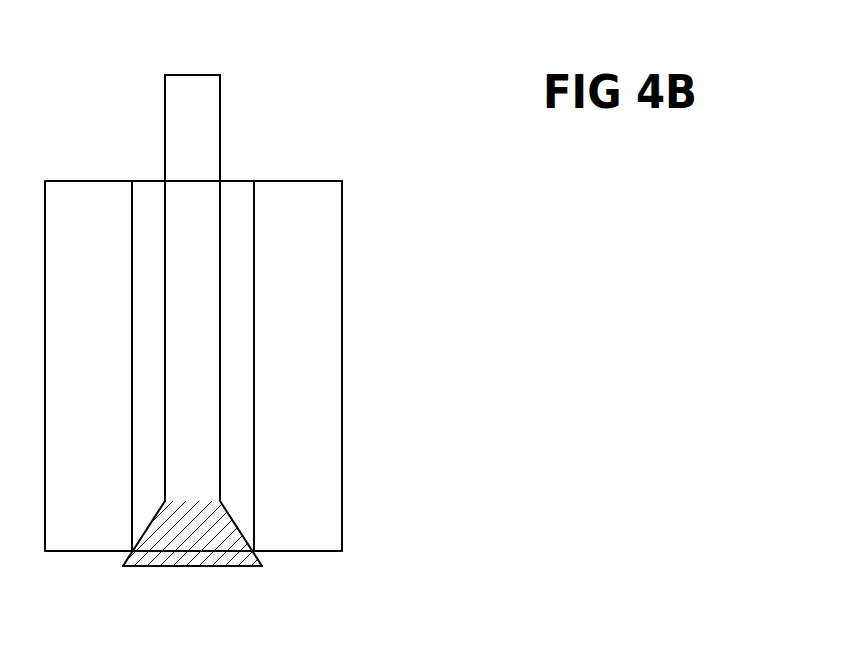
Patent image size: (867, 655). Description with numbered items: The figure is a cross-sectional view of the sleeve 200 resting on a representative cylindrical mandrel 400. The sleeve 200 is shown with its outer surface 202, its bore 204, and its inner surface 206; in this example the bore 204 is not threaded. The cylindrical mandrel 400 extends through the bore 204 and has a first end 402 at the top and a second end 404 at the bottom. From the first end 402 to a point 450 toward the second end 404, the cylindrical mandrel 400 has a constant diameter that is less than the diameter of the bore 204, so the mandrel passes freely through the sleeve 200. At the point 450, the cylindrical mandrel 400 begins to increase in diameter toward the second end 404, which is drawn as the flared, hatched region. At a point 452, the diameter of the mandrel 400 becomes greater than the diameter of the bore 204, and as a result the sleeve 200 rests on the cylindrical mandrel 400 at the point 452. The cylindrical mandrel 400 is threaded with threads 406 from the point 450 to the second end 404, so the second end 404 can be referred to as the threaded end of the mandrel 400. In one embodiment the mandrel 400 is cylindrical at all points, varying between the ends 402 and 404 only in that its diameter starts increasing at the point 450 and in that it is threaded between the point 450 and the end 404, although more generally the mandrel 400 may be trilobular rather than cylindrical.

The sleeve 200 is at (322, 215).
The outer surface 202 is at (342, 315).
The bore 204 is at (239, 162).
The inner surface 206 is at (148, 198).
The cylindrical mandrel 400 is at (220, 80).
The first end 402 is at (178, 75).
The second end 404 is at (213, 566).
The threads 406 is at (147, 557).
The point 450 is at (220, 501).
The point 452 is at (263, 552).